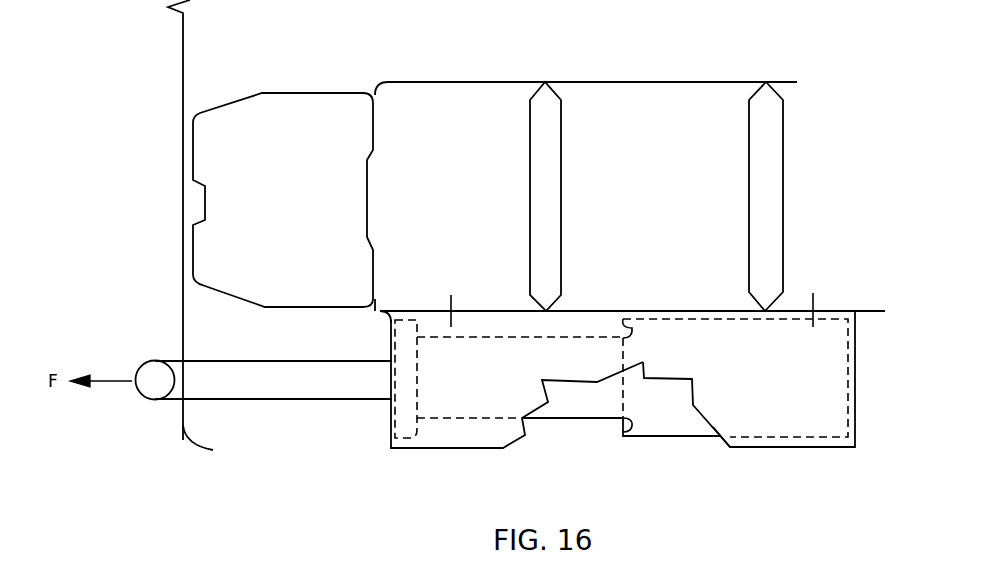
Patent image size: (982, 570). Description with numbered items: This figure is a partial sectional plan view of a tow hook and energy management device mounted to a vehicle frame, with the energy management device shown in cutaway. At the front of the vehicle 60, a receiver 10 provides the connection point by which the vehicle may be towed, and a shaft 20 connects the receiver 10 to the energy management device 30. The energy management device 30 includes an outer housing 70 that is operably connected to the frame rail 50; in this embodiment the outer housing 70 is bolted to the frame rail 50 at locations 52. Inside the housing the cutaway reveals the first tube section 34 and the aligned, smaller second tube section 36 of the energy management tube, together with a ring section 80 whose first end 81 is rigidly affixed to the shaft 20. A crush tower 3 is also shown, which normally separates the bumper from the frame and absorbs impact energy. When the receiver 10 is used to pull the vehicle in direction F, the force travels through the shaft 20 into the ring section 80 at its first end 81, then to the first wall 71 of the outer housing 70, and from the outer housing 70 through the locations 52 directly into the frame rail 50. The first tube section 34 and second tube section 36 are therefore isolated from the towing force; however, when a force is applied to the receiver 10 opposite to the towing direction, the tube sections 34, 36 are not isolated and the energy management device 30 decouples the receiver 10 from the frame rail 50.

The crush tower 3 is at (293, 92).
The receiver 10 is at (150, 399).
The shaft 20 is at (215, 400).
The energy management device 30 is at (795, 458).
The first tube section 34 is at (678, 440).
The second tube section 36 is at (537, 422).
The frame rail 50 is at (847, 307).
The locations 52 is at (449, 298).
The vehicle 60 is at (183, 113).
The outer housing 70 is at (833, 450).
The first wall 71 is at (390, 337).
The ring section 80 is at (420, 440).
The first end 81 is at (385, 425).